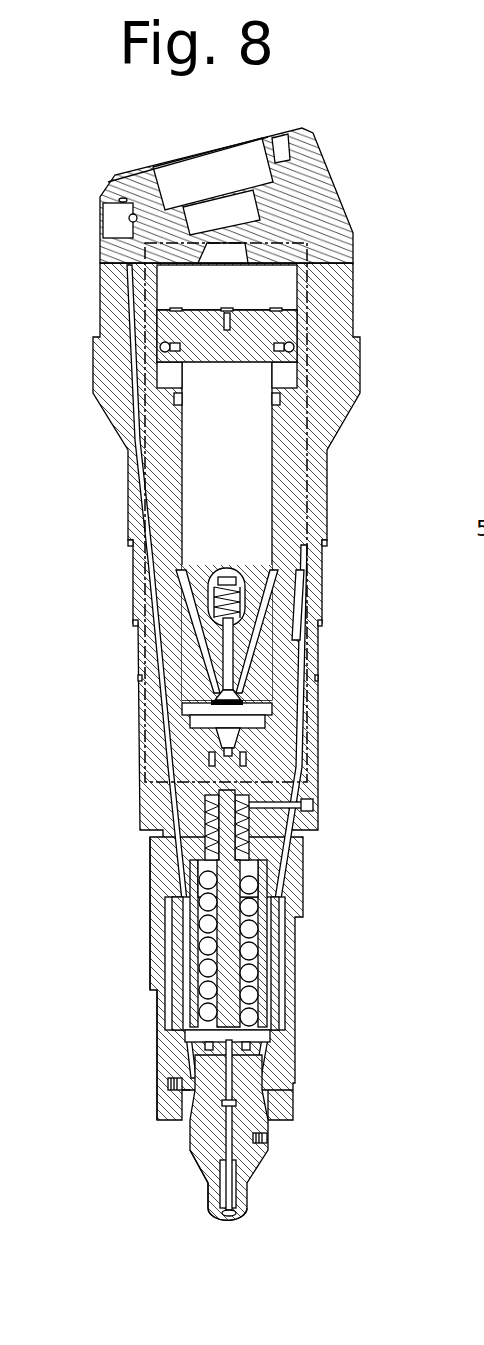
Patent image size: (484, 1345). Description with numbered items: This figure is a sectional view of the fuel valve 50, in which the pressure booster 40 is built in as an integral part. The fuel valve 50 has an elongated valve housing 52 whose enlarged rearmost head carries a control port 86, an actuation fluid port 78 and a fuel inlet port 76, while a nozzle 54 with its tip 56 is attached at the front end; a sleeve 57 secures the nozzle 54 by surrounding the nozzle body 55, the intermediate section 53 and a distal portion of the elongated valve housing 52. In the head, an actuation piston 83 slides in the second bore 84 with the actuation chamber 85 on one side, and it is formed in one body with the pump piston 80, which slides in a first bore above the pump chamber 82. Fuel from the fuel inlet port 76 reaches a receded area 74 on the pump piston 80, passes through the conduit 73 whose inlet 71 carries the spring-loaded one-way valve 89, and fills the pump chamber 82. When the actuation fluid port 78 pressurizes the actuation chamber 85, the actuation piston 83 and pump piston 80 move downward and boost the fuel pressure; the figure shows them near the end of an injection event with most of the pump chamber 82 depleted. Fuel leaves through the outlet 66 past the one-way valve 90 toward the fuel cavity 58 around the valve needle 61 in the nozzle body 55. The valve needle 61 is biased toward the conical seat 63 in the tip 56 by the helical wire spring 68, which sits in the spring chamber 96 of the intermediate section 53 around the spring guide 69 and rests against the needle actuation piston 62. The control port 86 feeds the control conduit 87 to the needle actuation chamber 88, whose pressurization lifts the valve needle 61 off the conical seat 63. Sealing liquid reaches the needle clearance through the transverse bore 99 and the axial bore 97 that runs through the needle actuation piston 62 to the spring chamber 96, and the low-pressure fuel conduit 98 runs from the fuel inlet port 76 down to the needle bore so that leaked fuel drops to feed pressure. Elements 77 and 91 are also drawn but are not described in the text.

The fuel valve 50 is at (295, 106).
The sleeve 57 is at (143, 173).
The control port 86 is at (120, 222).
The actuation chamber 85 is at (232, 257).
The second bore 84 is at (158, 303).
The pressure booster 40 is at (307, 327).
The actuation piston 83 is at (170, 333).
The control conduit 87 is at (140, 430).
The pump piston 80 is at (258, 487).
The elongated valve housing 52 is at (113, 543).
The actuation fluid port 78 is at (240, 577).
The receded area 74 is at (185, 598).
The fuel inlet port 76 is at (308, 597).
The valve stem 77 is at (225, 640).
The inlet 71 is at (218, 700).
The conduit 73 is at (250, 657).
The one-way valve 89 is at (215, 712).
The pump chamber 82 is at (257, 716).
The outlet 66 is at (227, 740).
The one-way valve 90 is at (230, 773).
The spring 91 is at (215, 840).
The low-pressure fuel conduit 98 is at (277, 825).
The spring chamber 96 is at (200, 928).
The helical wire spring 68 is at (247, 947).
The intermediate section 53 is at (173, 983).
The spring guide 69 is at (223, 997).
The axial bore 97 is at (227, 1075).
The needle actuation piston 62 is at (237, 1060).
The transverse bore 99 is at (220, 1110).
The needle actuation chamber 88 is at (242, 1087).
The valve needle 61 is at (223, 1153).
The nozzle body 55 is at (200, 1165).
The fuel cavity 58 is at (233, 1170).
The conical seat 63 is at (217, 1215).
The nozzle 54 is at (242, 1203).
The tip 56 is at (237, 1228).